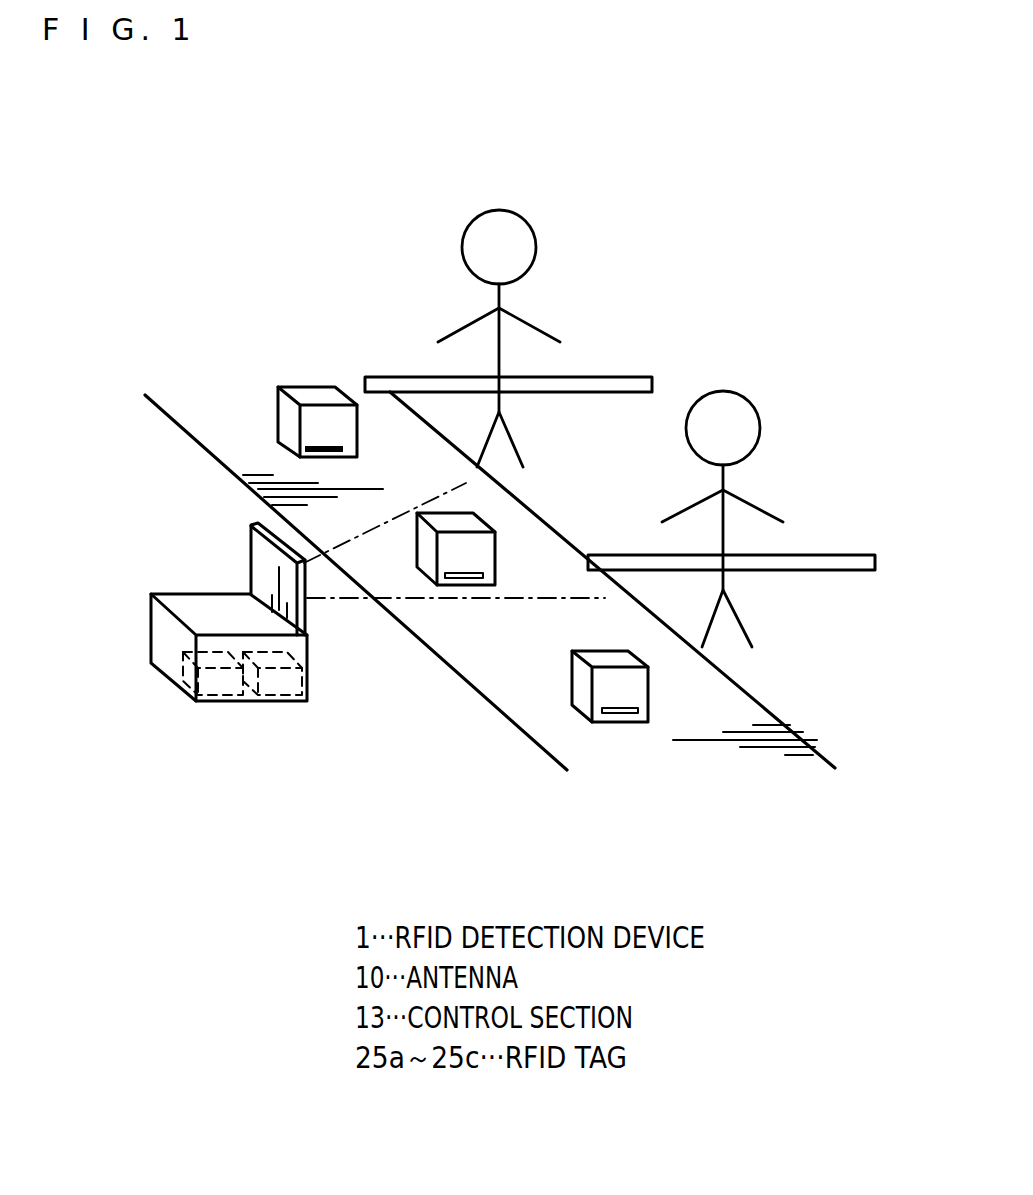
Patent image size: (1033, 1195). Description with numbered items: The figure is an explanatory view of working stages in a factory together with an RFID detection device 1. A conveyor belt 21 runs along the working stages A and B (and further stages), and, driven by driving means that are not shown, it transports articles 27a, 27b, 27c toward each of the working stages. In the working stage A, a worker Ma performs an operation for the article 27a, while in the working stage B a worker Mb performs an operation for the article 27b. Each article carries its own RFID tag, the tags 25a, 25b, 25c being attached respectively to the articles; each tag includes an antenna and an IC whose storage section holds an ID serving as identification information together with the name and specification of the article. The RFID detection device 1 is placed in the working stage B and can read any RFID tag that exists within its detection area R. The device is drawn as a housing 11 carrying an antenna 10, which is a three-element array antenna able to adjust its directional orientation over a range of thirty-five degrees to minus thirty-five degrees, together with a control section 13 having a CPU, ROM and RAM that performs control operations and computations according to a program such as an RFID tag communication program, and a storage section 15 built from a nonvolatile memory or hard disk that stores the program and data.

The RFID detection device 1 is at (116, 581).
The antenna 10 is at (253, 553).
The housing 11 is at (162, 637).
The control section 13 is at (183, 670).
The storage section 15 is at (275, 697).
The conveyor belt 21 is at (513, 695).
The detection area R is at (410, 598).
The RFID tag 25a is at (315, 446).
The RFID tag 25b is at (472, 570).
The RFID tag 25c is at (640, 710).
The article 27a is at (280, 386).
The article 27b is at (527, 524).
The article 27c is at (707, 685).
The worker Ma is at (537, 245).
The worker Mb is at (760, 422).
The working stage A is at (636, 333).
The working stage B is at (854, 523).